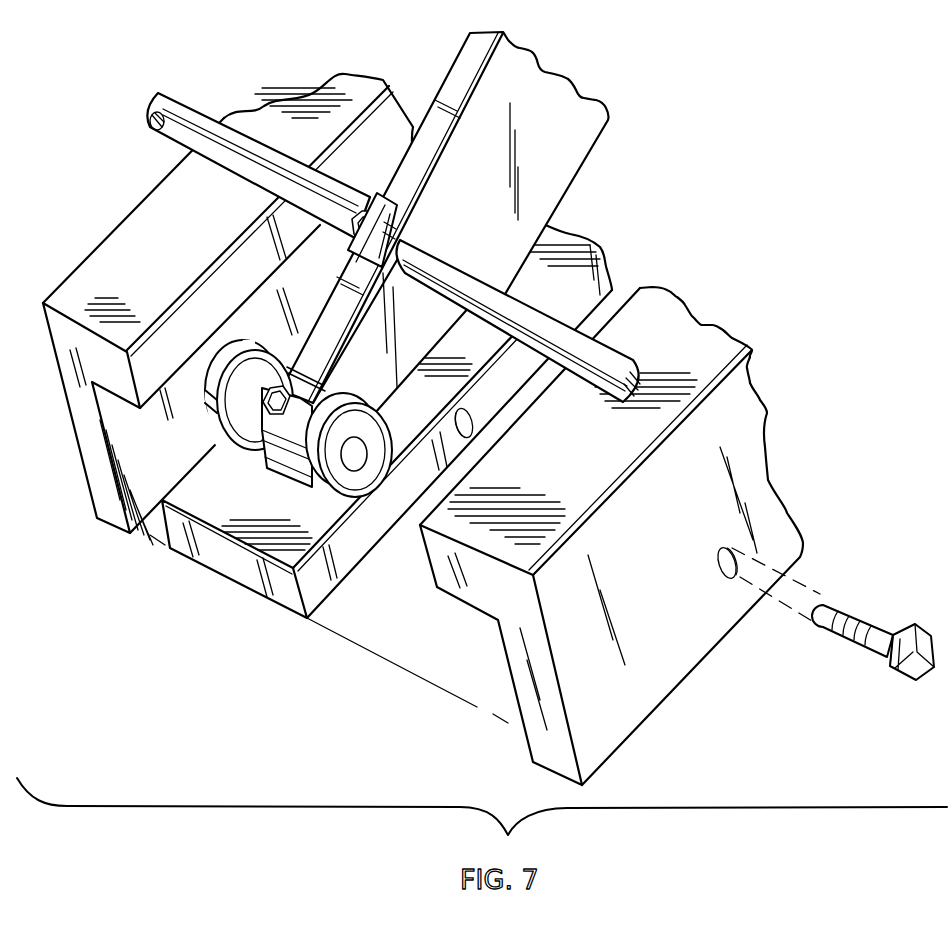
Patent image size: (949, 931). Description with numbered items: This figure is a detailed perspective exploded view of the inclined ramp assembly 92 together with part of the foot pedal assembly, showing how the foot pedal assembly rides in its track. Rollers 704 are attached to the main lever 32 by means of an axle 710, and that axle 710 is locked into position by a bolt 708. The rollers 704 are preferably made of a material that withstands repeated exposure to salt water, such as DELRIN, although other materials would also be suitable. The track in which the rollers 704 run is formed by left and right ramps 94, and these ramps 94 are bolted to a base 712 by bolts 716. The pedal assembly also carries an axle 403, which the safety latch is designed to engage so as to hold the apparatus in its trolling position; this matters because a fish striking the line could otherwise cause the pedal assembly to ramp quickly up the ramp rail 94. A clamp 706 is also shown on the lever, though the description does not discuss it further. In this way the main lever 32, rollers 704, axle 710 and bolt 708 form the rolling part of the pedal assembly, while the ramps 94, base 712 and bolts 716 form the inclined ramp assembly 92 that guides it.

The main lever 32 is at (557, 163).
The inclined ramp assembly 92 is at (787, 209).
The ramp rail 94 is at (153, 223).
The axle 403 is at (628, 355).
The rollers 704 is at (321, 457).
The clamp 706 is at (400, 232).
The bolt 708 is at (268, 465).
The axle 710 is at (356, 458).
The base 712 is at (343, 550).
The bolts 716 is at (930, 652).